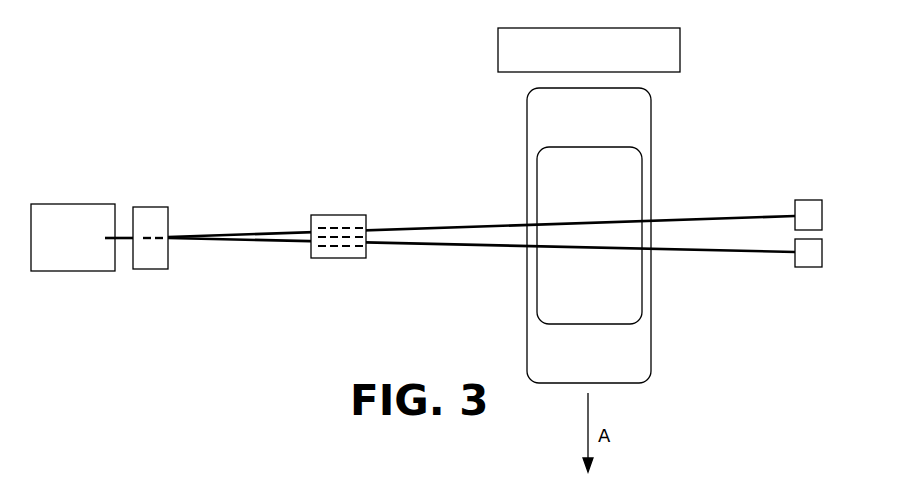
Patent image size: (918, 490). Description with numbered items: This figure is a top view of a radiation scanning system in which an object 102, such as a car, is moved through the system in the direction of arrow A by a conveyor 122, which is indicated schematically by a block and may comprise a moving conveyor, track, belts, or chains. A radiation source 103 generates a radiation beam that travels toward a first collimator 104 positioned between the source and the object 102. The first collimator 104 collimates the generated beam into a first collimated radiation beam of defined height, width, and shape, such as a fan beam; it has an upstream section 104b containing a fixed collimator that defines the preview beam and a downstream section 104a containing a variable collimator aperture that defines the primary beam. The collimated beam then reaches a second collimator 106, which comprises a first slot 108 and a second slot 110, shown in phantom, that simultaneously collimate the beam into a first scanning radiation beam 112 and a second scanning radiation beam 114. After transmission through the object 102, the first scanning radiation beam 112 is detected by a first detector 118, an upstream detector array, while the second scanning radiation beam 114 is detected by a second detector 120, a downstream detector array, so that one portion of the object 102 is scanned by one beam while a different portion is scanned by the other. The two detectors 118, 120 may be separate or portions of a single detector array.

The object 102 is at (651, 112).
The light source 103 is at (70, 271).
The first collimator 104 is at (175, 255).
The downstream section 104a is at (153, 265).
The upstream section 104b is at (155, 216).
The second collimator 106 is at (323, 262).
The first slot 108 is at (336, 220).
The second slot 110 is at (348, 256).
The first scanning radiation beam 112 is at (452, 222).
The second scanning radiation beam 114 is at (425, 252).
The first detector 118 is at (810, 200).
The second detector 120 is at (808, 267).
The conveyor 122 is at (680, 43).